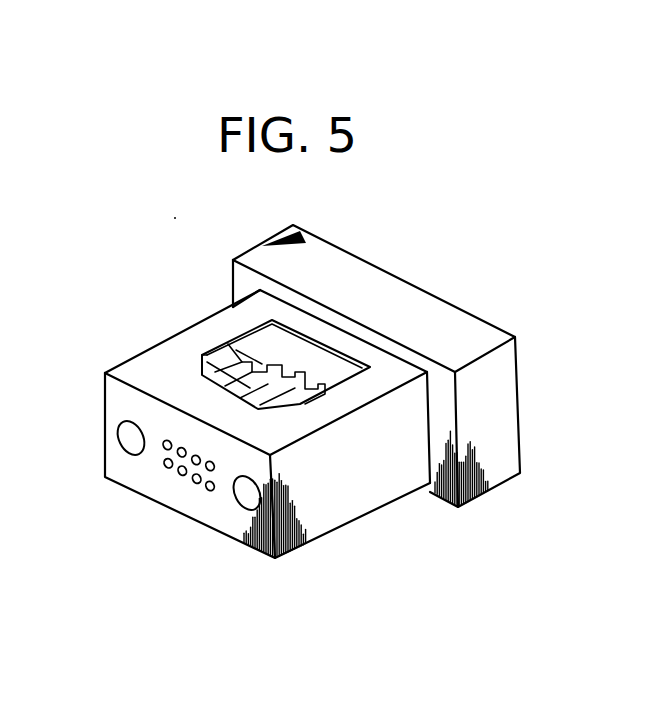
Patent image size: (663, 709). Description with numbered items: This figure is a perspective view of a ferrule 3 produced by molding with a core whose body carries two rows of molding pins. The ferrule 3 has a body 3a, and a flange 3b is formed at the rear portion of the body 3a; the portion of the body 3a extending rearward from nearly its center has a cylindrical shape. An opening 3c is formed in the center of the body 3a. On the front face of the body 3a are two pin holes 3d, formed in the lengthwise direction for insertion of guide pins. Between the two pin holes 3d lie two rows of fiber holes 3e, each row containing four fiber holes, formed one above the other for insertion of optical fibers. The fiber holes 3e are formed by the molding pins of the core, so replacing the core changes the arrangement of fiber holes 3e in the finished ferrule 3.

The ferrule 3 is at (328, 397).
The body 3a is at (343, 490).
The flange 3b is at (503, 408).
The opening 3c is at (266, 322).
The pin holes 3d is at (125, 448).
The fiber holes 3e is at (197, 481).